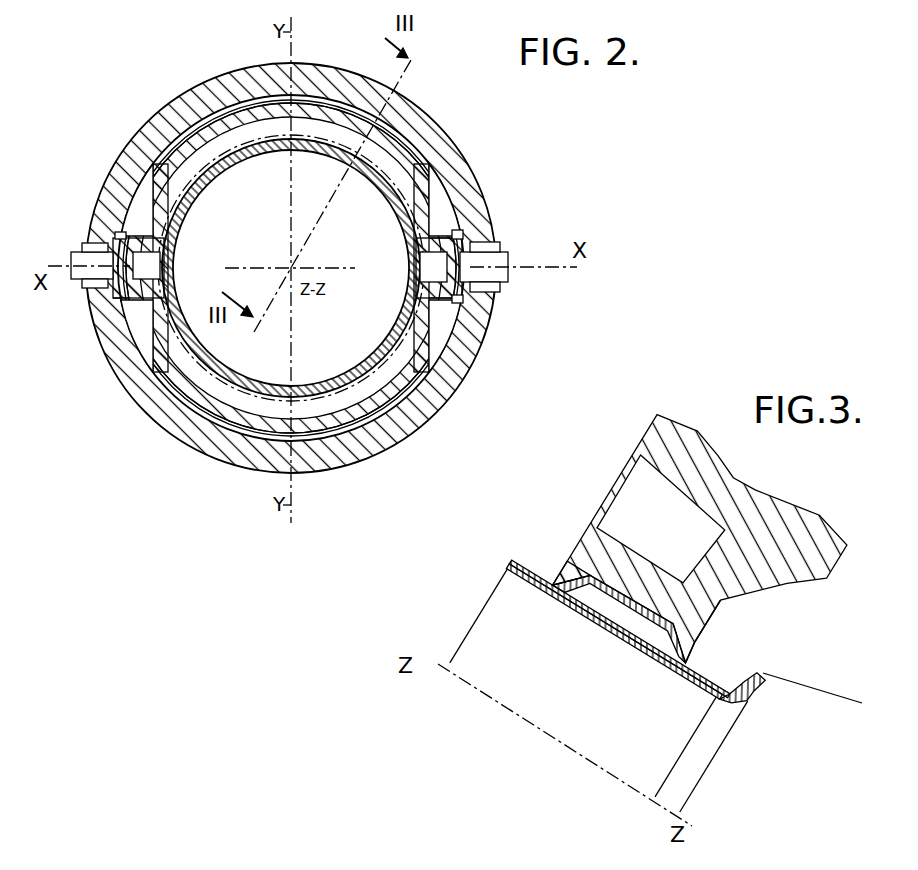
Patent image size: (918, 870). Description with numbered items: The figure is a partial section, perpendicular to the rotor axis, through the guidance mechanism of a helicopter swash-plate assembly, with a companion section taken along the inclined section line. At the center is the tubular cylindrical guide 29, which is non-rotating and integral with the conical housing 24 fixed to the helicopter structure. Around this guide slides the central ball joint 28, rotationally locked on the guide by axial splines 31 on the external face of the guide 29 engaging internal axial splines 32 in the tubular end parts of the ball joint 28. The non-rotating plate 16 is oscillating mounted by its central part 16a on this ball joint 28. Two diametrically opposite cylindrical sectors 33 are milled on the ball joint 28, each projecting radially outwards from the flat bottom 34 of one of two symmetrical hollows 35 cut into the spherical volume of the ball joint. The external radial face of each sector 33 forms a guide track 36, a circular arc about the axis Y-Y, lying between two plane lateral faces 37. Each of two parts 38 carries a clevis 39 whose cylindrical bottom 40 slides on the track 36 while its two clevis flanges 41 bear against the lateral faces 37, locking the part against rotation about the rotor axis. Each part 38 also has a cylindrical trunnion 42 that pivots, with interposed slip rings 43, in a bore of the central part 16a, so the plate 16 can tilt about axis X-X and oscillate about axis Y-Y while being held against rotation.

In FIG. 3, the non-rotating plate 16 is at (758, 574).
In FIG. 2, the central part 16a is at (207, 88).
In FIG. 3, the central part 16a is at (693, 609).
In FIG. 3, the conical housing 24 is at (818, 687).
In FIG. 2, the ball joint 28 is at (313, 108).
In FIG. 3, the ball joint 28 is at (652, 615).
In FIG. 2, the tubular cylindrical guide 29 is at (392, 186).
In FIG. 3, the tubular cylindrical guide 29 is at (560, 590).
In FIG. 2, the axial splines 31 is at (279, 247).
In FIG. 3, the axial splines 31 is at (537, 571).
In FIG. 2, the internal axial splines 32 is at (200, 163).
In FIG. 3, the internal axial splines 32 is at (566, 594).
In FIG. 2, the cylindrical sector 33 is at (140, 243).
In FIG. 2, the flat bottom 34 is at (153, 193).
In FIG. 2, the hollow 35 is at (140, 333).
In FIG. 2, the guide track 36 is at (463, 267).
In FIG. 2, the lateral face 37 is at (443, 230).
In FIG. 2, the part 38 is at (110, 304).
In FIG. 2, the clevis 39 is at (107, 240).
In FIG. 2, the bottom 40 is at (137, 260).
In FIG. 2, the clevis flange 41 is at (123, 303).
In FIG. 2, the trunnion 42 is at (497, 270).
In FIG. 2, the slip ring 43 is at (493, 250).